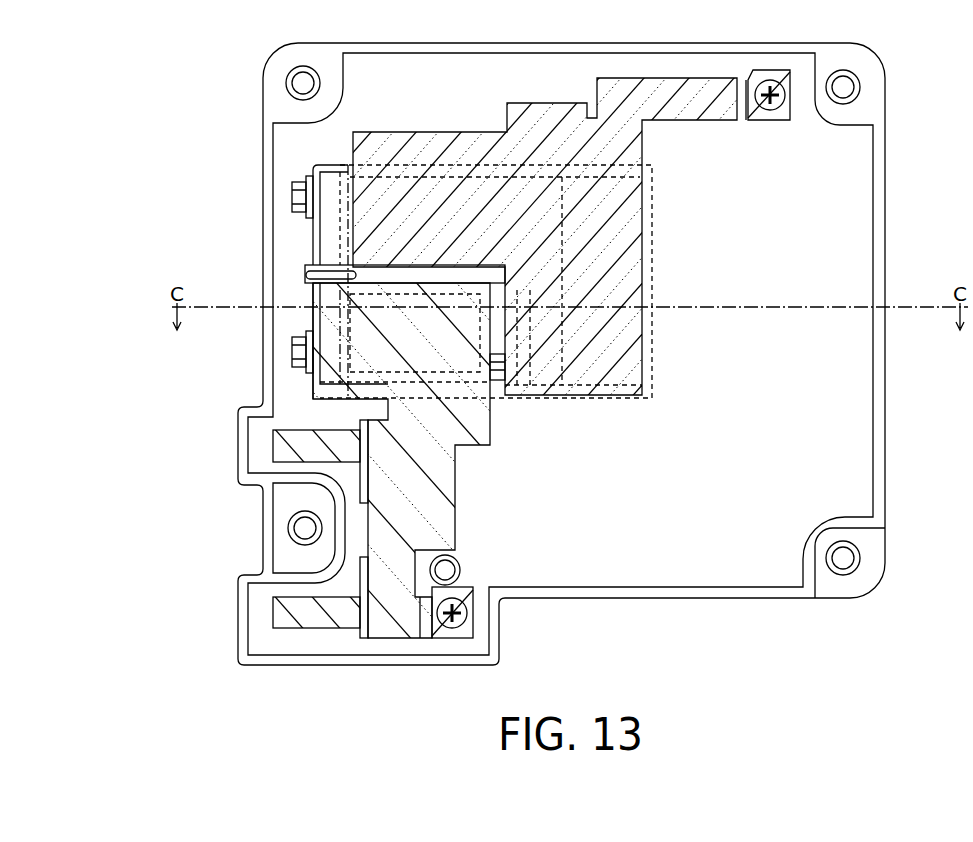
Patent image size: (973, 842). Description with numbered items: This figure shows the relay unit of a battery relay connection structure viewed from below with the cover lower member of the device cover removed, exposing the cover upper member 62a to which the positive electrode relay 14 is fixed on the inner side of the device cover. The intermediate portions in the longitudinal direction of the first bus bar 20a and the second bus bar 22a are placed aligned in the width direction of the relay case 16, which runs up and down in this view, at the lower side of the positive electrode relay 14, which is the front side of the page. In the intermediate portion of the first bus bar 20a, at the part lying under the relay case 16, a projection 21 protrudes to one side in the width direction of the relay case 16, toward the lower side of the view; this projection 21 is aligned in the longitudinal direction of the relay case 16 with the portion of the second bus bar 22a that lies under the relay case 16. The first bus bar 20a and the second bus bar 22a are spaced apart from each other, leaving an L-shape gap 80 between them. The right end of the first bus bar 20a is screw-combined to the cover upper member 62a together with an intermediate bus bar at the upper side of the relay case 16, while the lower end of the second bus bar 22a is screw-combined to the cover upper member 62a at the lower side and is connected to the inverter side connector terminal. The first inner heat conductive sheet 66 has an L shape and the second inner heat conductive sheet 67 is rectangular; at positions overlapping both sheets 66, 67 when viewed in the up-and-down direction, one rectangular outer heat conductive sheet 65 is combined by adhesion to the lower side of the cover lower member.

The cover upper member 62a is at (830, 182).
The first bus bar 20a is at (693, 125).
The relay case 16 is at (563, 231).
The first inner heat conductive sheet 66 is at (645, 263).
The outer heat conductive sheet 65 is at (653, 367).
The L-shape gap 80 is at (403, 280).
The projection 21 is at (607, 367).
The positive electrode relay 14 is at (566, 378).
The second bus bar 22a is at (457, 465).
The second inner heat conductive sheet 67 is at (472, 485).